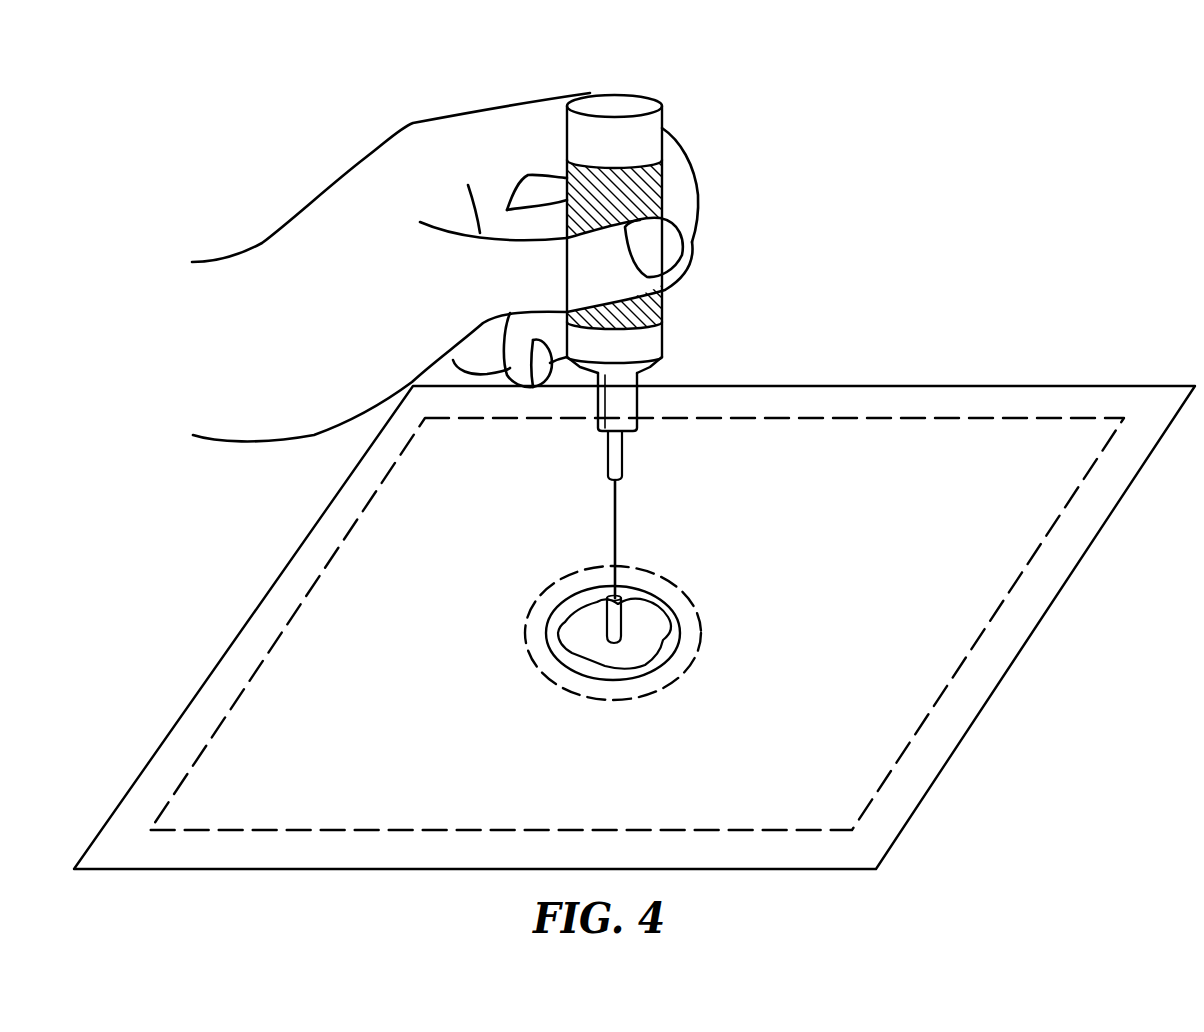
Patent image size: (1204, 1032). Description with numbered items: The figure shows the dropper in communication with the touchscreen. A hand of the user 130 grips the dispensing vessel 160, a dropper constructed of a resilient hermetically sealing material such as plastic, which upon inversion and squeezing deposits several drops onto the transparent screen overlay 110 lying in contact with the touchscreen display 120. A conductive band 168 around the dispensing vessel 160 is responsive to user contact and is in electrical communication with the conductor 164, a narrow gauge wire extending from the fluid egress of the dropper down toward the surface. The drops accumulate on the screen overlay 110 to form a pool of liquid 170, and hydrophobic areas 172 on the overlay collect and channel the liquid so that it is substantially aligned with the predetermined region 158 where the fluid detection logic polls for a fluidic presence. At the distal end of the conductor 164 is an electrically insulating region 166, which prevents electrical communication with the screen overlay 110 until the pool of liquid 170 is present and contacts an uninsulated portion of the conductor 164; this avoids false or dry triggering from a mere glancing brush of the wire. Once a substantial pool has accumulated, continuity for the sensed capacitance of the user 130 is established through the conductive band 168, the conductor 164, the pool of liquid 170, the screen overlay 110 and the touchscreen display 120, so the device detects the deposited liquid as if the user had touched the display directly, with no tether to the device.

The screen overlay 110 is at (978, 419).
The touchscreen display 120 is at (973, 386).
The user 130 is at (418, 152).
The predetermined region 158 is at (630, 590).
The dispensing vessel 160 is at (613, 135).
The conductor 164 is at (607, 522).
The electrically insulating region 166 is at (613, 625).
The conductive band 168 is at (623, 196).
The pool of liquid 170 is at (650, 610).
The hydrophobic areas 172 is at (635, 697).